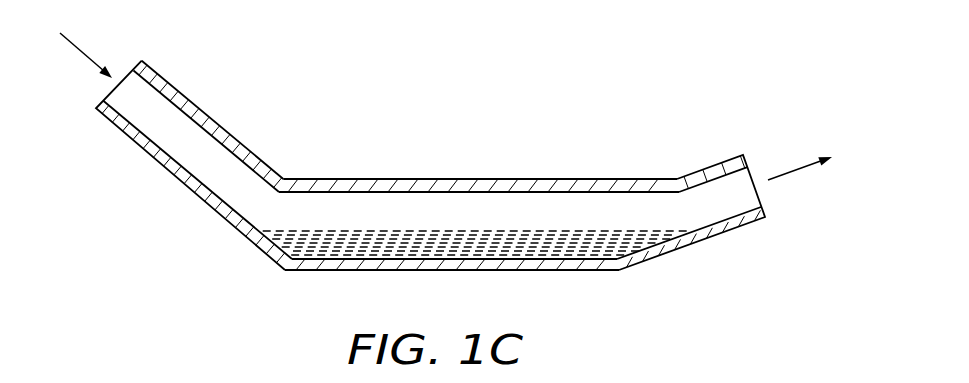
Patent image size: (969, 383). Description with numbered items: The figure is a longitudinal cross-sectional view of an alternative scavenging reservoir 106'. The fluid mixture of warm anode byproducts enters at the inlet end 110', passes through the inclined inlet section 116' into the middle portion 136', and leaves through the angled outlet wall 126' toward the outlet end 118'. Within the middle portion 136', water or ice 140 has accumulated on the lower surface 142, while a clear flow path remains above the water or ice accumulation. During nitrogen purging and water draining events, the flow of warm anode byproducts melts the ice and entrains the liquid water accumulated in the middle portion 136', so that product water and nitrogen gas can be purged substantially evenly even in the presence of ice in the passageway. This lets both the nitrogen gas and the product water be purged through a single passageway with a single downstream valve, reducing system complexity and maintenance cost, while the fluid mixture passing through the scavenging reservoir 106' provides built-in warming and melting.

The scavenging reservoir 106' is at (407, 195).
The inlet end 110' is at (115, 45).
The inlet section 116' is at (166, 165).
The outlet flow direction 118' is at (823, 185).
The outlet section wall 126' is at (696, 265).
The middle portion 136' is at (479, 155).
The water or ice 140 is at (346, 251).
The lower surface 142 is at (557, 272).